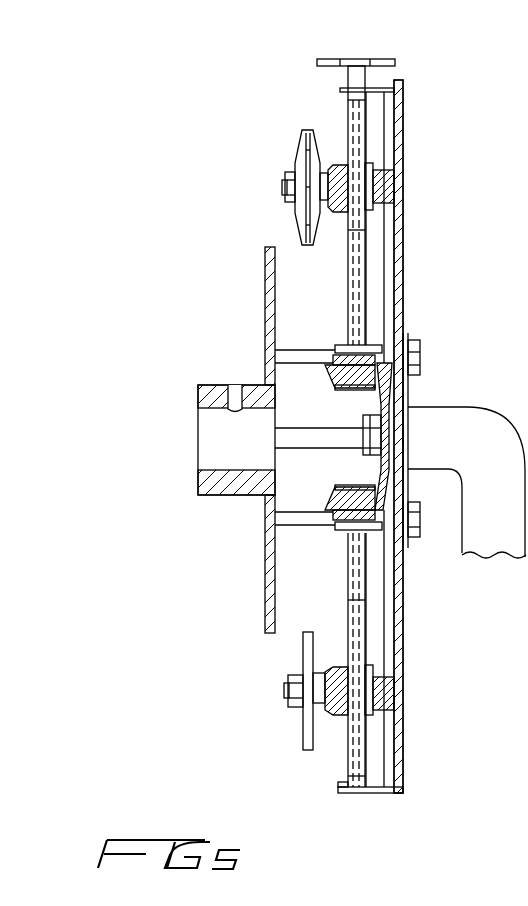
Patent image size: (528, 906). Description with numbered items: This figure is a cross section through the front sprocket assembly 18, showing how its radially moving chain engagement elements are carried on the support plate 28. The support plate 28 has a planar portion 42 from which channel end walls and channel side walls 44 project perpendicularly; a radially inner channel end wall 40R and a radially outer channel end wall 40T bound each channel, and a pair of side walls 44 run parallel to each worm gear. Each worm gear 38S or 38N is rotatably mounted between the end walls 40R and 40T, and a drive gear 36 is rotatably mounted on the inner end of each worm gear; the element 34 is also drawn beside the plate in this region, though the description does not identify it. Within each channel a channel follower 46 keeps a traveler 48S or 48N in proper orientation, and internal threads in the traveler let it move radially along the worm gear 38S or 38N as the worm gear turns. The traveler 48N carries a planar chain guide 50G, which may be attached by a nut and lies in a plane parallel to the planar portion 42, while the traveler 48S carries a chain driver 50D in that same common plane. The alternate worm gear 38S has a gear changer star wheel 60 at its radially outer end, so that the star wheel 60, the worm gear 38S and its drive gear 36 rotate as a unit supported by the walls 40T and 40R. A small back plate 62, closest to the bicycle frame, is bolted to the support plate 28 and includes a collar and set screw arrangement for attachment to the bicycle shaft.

The front sprocket assembly 18 is at (460, 782).
The support plate 28 is at (402, 742).
The bracket 34 is at (402, 382).
The drive gear 36 is at (412, 340).
The worm gear 38S is at (350, 266).
The worm gear 38N is at (348, 586).
The radially outer channel end wall 40T is at (402, 104).
The radially inner channel end wall 40R is at (338, 346).
The planar portion 42 is at (402, 266).
The channel side wall 44 is at (348, 118).
The channel follower 46 is at (388, 170).
The traveler 48S is at (345, 165).
The traveler 48N is at (340, 672).
The chain driver 50D is at (295, 165).
The planar chain guide 50G is at (303, 738).
The gear changer star wheel 60 is at (380, 58).
The back plate 62 is at (262, 520).